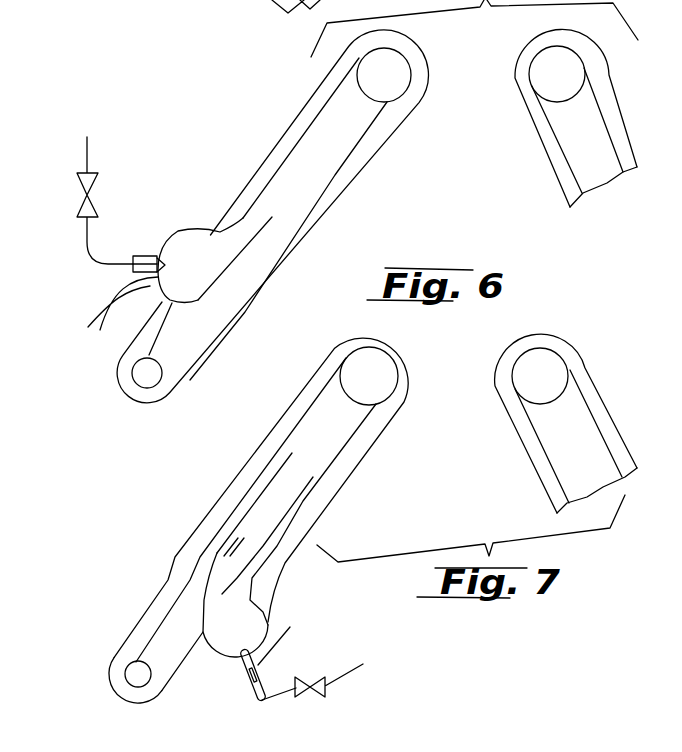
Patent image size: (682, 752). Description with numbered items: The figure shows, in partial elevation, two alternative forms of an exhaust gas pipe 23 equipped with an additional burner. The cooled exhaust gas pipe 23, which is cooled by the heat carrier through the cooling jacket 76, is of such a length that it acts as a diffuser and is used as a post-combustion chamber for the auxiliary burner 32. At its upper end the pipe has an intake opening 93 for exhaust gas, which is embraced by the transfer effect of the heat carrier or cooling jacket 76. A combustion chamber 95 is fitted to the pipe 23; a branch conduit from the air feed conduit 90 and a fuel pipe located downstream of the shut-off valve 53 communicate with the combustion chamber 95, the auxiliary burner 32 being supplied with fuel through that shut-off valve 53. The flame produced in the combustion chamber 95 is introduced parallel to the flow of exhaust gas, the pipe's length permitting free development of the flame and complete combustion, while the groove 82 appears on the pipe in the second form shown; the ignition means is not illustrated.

In FIG. 6, the exhaust gas pipe 23 is at (340, 160).
In FIG. 7, the exhaust gas pipe 23 is at (350, 436).
In FIG. 6, the intake opening 93 is at (398, 78).
In FIG. 7, the intake opening 93 is at (385, 387).
In FIG. 6, the cooling jacket 76 is at (140, 393).
In FIG. 7, the cooling jacket 76 is at (158, 612).
In FIG. 6, the combustion chamber 95 is at (178, 252).
In FIG. 7, the combustion chamber 95 is at (246, 609).
In FIG. 6, the auxiliary burner 32 is at (143, 257).
In FIG. 7, the auxiliary burner 32 is at (252, 664).
In FIG. 6, the shut-off valve 53 is at (77, 185).
In FIG. 7, the shut-off valve 53 is at (328, 673).
In FIG. 6, the air feed conduit 90 is at (97, 320).
In FIG. 7, the air feed conduit 90 is at (250, 699).
In FIG. 7, the groove 82 is at (283, 497).